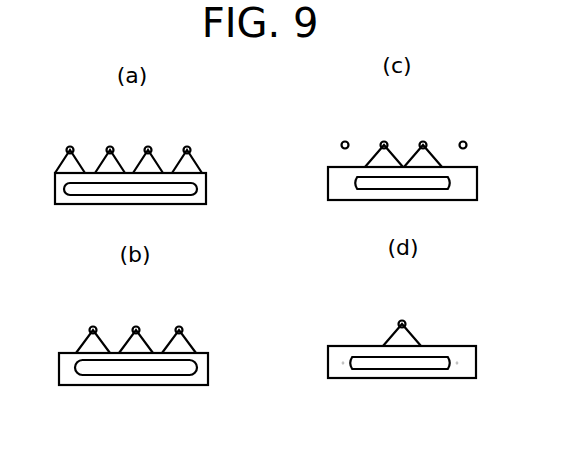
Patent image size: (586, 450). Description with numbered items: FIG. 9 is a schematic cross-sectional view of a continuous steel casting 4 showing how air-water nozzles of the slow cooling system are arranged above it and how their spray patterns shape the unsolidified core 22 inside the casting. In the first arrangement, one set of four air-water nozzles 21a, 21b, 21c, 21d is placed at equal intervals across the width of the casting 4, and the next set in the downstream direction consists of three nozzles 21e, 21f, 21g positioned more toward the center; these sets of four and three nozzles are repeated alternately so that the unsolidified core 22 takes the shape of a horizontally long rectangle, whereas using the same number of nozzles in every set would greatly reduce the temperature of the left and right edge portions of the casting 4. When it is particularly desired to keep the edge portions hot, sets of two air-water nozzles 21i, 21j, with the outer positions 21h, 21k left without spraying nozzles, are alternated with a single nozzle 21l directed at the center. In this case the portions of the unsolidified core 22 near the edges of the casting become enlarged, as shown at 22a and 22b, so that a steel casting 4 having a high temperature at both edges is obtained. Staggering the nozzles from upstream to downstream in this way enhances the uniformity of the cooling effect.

The steel casting 4 is at (55, 193).
The unsolidified core 22 is at (75, 195).
The enlarged core portion 22a is at (345, 369).
The enlarged core portion 22b is at (456, 369).
The air-water nozzle 21a is at (70, 146).
The air-water nozzle 21b is at (110, 146).
The air-water nozzle 21c is at (148, 146).
The air-water nozzle 21d is at (187, 146).
The air-water nozzle 21e is at (93, 326).
The air-water nozzle 21f is at (136, 326).
The air-water nozzle 21g is at (179, 326).
The air-water nozzle 21h is at (345, 142).
The air-water nozzle 21i is at (384, 142).
The air-water nozzle 21j is at (423, 142).
The air-water nozzle 21k is at (463, 142).
The air-water nozzle 21l is at (402, 320).